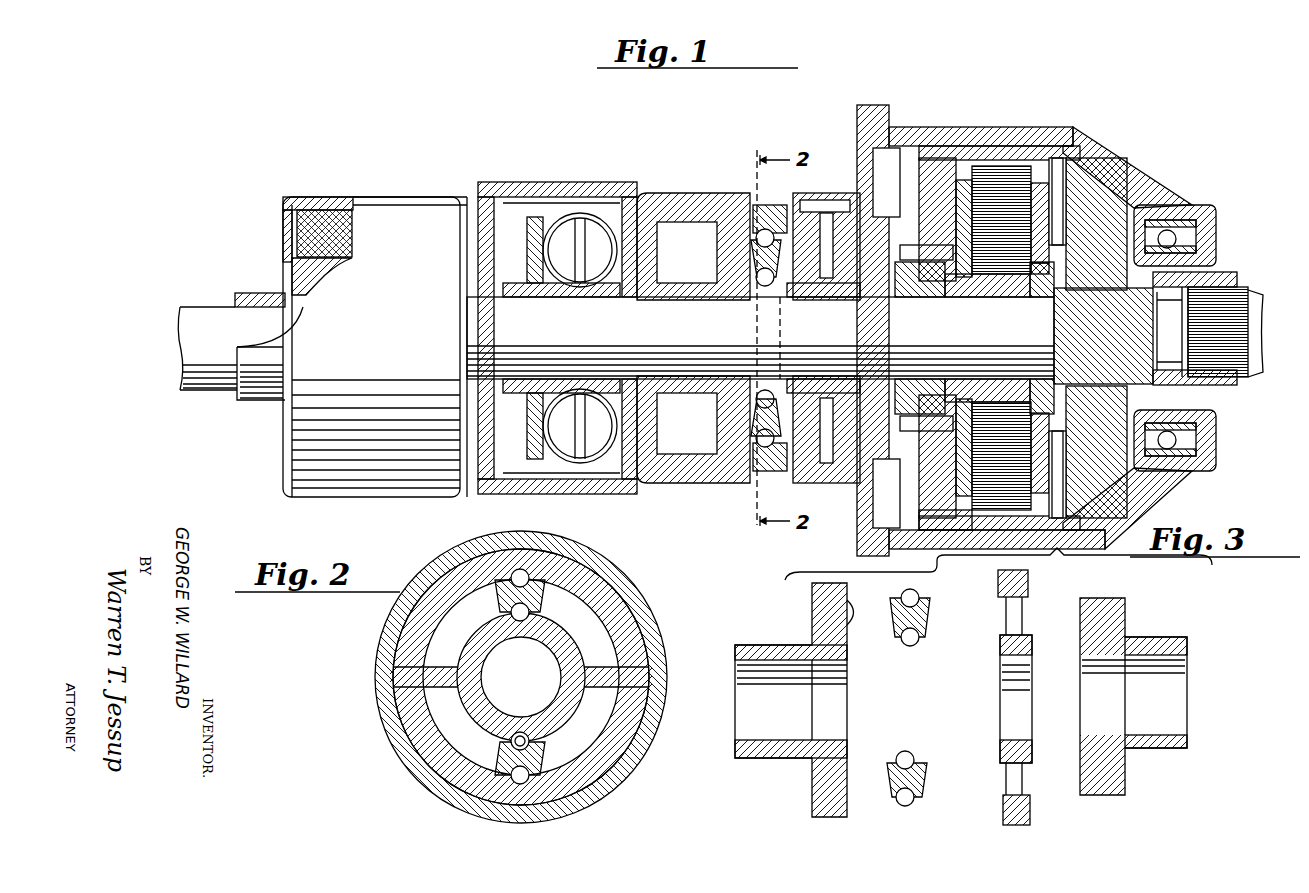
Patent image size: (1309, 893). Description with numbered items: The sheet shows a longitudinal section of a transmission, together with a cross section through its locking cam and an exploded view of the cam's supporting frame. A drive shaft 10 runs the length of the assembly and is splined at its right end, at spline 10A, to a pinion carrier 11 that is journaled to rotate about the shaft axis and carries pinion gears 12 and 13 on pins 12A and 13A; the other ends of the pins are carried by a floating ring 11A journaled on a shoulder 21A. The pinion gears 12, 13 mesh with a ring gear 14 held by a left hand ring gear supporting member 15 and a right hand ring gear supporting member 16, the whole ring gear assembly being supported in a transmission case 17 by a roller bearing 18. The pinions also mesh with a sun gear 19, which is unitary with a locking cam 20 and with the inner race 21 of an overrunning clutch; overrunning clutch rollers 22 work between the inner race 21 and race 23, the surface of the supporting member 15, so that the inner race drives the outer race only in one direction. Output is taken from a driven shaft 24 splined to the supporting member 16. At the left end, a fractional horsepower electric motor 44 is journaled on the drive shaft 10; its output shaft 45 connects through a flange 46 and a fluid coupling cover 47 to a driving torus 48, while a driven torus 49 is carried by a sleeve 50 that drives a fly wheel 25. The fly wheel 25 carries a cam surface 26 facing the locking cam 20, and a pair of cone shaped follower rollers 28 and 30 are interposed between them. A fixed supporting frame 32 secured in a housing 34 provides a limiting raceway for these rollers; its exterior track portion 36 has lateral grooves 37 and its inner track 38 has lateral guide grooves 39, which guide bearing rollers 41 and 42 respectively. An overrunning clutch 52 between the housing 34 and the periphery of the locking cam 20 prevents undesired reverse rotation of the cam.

In FIG. 1, the drive shaft 10 is at (200, 298).
In FIG. 1, the spline 10A is at (1068, 300).
In FIG. 1, the pinion carrier 11 is at (1050, 362).
In FIG. 1, the floating ring 11A is at (962, 185).
In FIG. 1, the pinion gear 12 is at (1001, 170).
In FIG. 1, the pin 12A is at (1040, 190).
In FIG. 1, the pinion gear 13 is at (1000, 512).
In FIG. 1, the pin 13A is at (948, 522).
In FIG. 1, the ring gear 14 is at (1060, 140).
In FIG. 1, the left hand ring gear supporting member 15 is at (930, 160).
In FIG. 1, the right hand ring gear supporting member 16 is at (1092, 188).
In FIG. 1, the transmission case 17 is at (1152, 192).
In FIG. 1, the roller bearing 18 is at (1166, 228).
In FIG. 1, the sun gear 19 is at (1002, 283).
In FIG. 1, the locking cam 20 is at (812, 292).
In FIG. 3, the locking cam 20 is at (1125, 607).
In FIG. 1, the inner race 21 is at (926, 292).
In FIG. 1, the shoulder 21A is at (958, 292).
In FIG. 1, the overrunning clutch rollers 22 is at (926, 338).
In FIG. 1, the race 23 is at (906, 270).
In FIG. 1, the driven shaft 24 is at (1234, 300).
In FIG. 1, the fly wheel 25 is at (745, 208).
In FIG. 3, the fly wheel 25 is at (812, 608).
In FIG. 3, the cam surface 26 is at (845, 622).
In FIG. 1, the cone shaped follower roller 28 is at (754, 445).
In FIG. 2, the cone shaped follower roller 28 is at (560, 770).
In FIG. 3, the cone shaped follower roller 28 is at (916, 770).
In FIG. 1, the cone shaped follower roller 30 is at (768, 243).
In FIG. 2, the cone shaped follower roller 30 is at (528, 578).
In FIG. 3, the cone shaped follower roller 30 is at (920, 604).
In FIG. 1, the fixed supporting frame 32 is at (760, 456).
In FIG. 2, the fixed supporting frame 32 is at (630, 630).
In FIG. 3, the fixed supporting frame 32 is at (1045, 612).
In FIG. 1, the housing 34 is at (682, 484).
In FIG. 2, the housing 34 is at (648, 729).
In FIG. 1, the exterior track portion 36 is at (776, 458).
In FIG. 2, the exterior track portion 36 is at (618, 605).
In FIG. 3, the exterior track portion 36 is at (998, 596).
In FIG. 1, the lateral grooves 37 is at (762, 230).
In FIG. 2, the lateral grooves 37 is at (525, 780).
In FIG. 3, the lateral grooves 37 is at (1003, 796).
In FIG. 1, the inner track 38 is at (762, 287).
In FIG. 1, the lateral guide grooves 39 is at (756, 290).
In FIG. 2, the lateral guide grooves 39 is at (512, 743).
In FIG. 3, the lateral guide grooves 39 is at (1000, 758).
In FIG. 2, the bearing rollers 41 is at (532, 745).
In FIG. 3, the bearing rollers 41 is at (912, 757).
In FIG. 2, the bearing rollers 42 is at (514, 784).
In FIG. 3, the bearing rollers 42 is at (912, 801).
In FIG. 1, the electric motor 44 is at (382, 357).
In FIG. 1, the output shaft 45 is at (478, 300).
In FIG. 1, the flange 46 is at (478, 264).
In FIG. 1, the fluid coupling cover 47 is at (482, 190).
In FIG. 1, the driving torus 48 is at (596, 220).
In FIG. 1, the driven torus 49 is at (560, 216).
In FIG. 1, the sleeve 50 is at (545, 297).
In FIG. 1, the overrunning clutch 52 is at (818, 206).